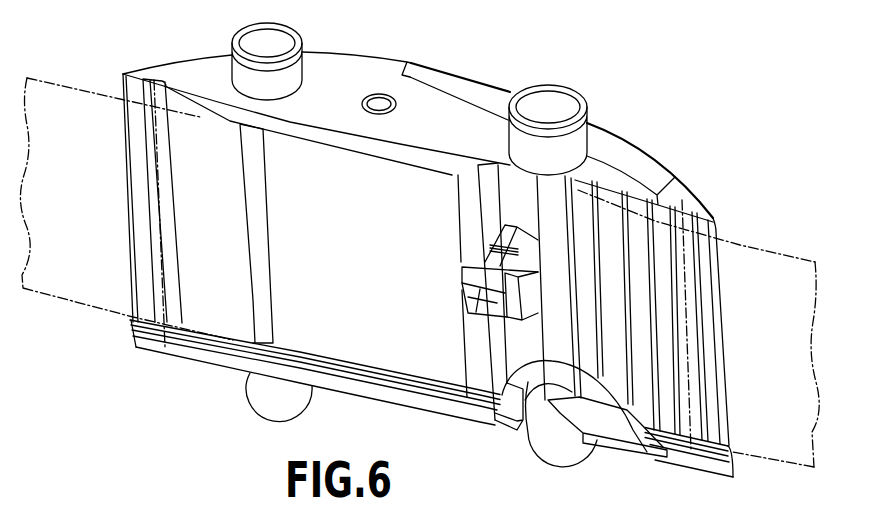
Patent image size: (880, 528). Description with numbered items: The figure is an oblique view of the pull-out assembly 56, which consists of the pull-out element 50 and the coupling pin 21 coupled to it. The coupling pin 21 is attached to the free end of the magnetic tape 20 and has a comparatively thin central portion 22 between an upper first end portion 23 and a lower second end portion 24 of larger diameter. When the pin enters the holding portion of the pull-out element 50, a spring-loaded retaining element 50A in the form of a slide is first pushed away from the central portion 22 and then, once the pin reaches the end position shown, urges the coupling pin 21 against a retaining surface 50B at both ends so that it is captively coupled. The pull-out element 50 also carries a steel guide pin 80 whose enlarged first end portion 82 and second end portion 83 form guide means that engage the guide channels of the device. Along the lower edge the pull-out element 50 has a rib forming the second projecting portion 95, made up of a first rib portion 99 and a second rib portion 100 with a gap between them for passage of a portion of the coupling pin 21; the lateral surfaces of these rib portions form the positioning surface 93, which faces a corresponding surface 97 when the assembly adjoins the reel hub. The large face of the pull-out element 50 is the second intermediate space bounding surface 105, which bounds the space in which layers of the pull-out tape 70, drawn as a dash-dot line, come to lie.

The magnetic tape 20 is at (748, 250).
The coupling pin 21 is at (548, 78).
The central portion 22 is at (538, 200).
The upper first end portion 23 is at (580, 132).
The lower second end portion 24 is at (565, 450).
The pull-out element 50 is at (680, 134).
The retaining element 50A is at (462, 268).
The retaining surface 50B is at (530, 422).
The pull-out assembly 56 is at (585, 69).
The pull-out tape 70 is at (63, 100).
The guide pin 80 is at (236, 24).
The first end portion 82 is at (295, 78).
The second end portion 83 is at (270, 385).
The positioning surface 93 is at (383, 390).
The second projecting portion 95 is at (128, 341).
The corresponding surface 97 is at (347, 140).
The first rib portion 99 is at (477, 397).
The second rib portion 100 is at (702, 447).
The second intermediate space bounding surface 105 is at (213, 227).